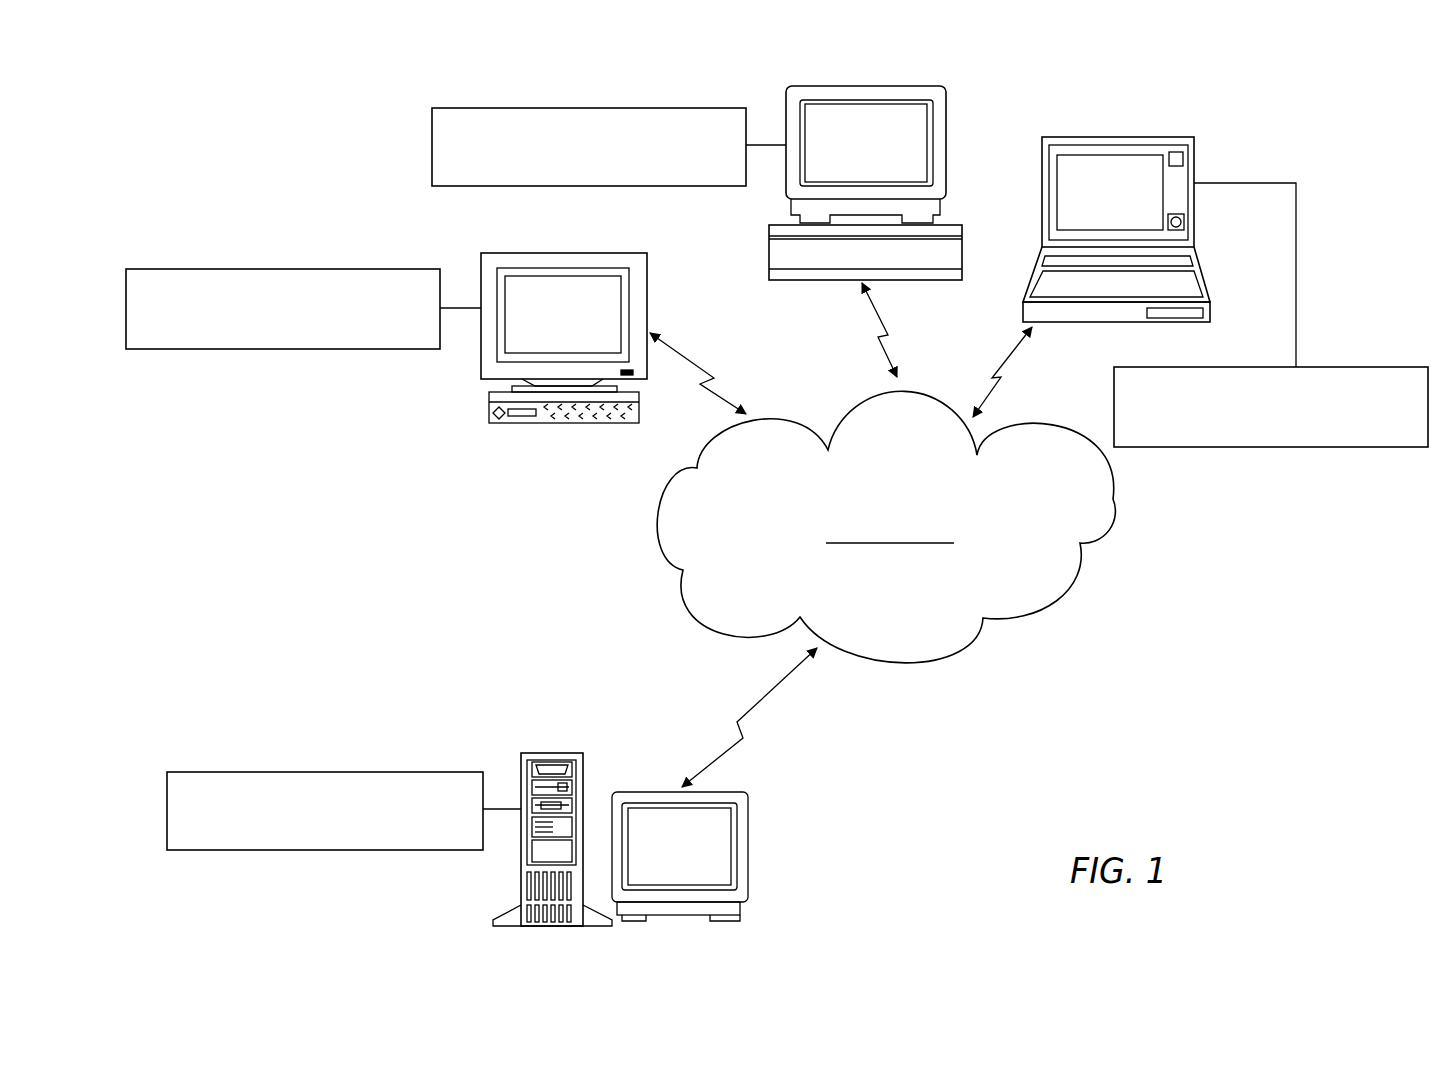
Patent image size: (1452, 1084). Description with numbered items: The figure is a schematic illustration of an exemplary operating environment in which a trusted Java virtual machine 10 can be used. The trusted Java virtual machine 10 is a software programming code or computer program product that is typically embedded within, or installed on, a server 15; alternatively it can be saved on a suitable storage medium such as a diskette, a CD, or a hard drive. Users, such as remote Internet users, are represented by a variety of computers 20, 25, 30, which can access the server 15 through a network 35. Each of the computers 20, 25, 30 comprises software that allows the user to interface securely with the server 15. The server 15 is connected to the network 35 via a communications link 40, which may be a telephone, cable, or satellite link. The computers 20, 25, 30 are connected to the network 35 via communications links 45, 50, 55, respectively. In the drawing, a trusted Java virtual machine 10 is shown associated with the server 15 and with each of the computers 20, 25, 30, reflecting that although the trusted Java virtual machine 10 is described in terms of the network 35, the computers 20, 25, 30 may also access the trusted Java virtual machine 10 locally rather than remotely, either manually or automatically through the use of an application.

The trusted Java virtual machine 10 is at (532, 108).
The server 15 is at (540, 753).
The computer 20 is at (647, 311).
The computer 25 is at (946, 128).
The computer 30 is at (1202, 265).
The network 35 is at (1113, 499).
The communications link 40 is at (787, 678).
The communications link 45 is at (723, 388).
The communications link 50 is at (873, 303).
The communications link 55 is at (1010, 355).